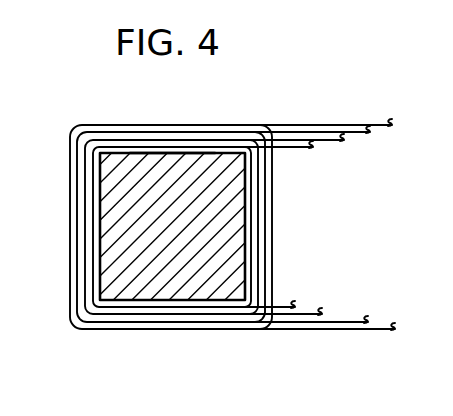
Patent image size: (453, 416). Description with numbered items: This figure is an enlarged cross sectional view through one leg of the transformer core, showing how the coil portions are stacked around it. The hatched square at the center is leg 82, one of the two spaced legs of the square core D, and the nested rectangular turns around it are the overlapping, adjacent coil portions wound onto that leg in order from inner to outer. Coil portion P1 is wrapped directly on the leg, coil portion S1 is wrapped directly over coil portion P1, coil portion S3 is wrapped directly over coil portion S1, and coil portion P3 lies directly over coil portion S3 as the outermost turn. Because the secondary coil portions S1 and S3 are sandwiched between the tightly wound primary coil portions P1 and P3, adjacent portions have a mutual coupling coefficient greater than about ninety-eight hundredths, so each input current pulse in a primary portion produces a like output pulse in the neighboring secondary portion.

The leg 82 is at (173, 282).
The core D is at (207, 157).
The coil portion P1 is at (293, 150).
The coil portion S1 is at (330, 142).
The coil portion S3 is at (358, 136).
The coil portion P3 is at (378, 123).